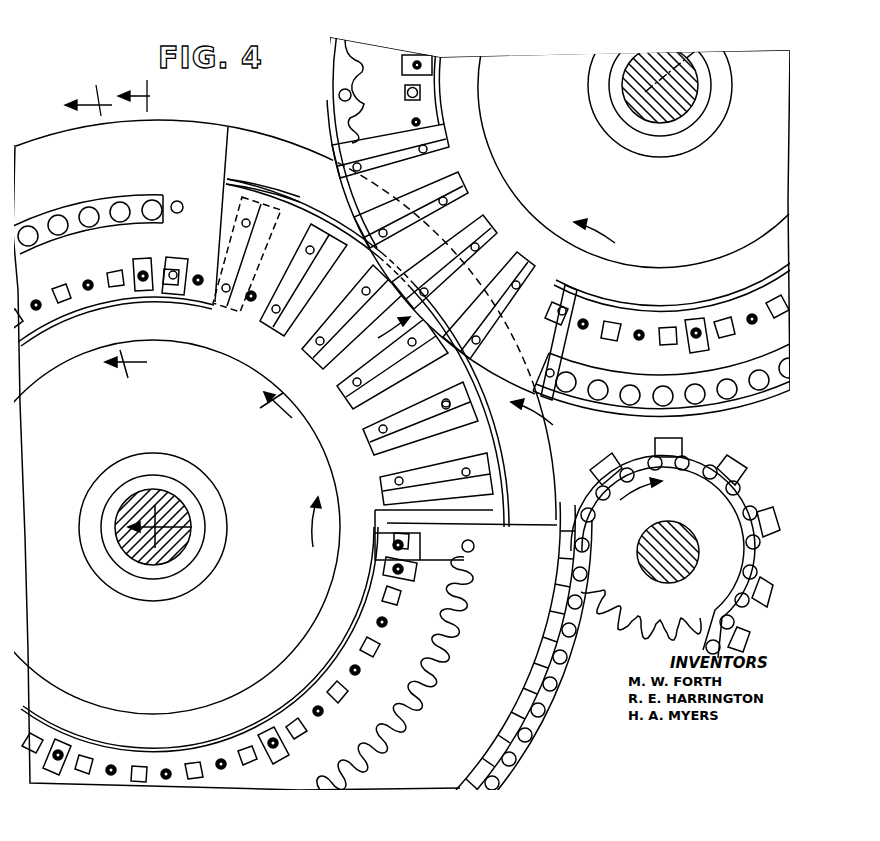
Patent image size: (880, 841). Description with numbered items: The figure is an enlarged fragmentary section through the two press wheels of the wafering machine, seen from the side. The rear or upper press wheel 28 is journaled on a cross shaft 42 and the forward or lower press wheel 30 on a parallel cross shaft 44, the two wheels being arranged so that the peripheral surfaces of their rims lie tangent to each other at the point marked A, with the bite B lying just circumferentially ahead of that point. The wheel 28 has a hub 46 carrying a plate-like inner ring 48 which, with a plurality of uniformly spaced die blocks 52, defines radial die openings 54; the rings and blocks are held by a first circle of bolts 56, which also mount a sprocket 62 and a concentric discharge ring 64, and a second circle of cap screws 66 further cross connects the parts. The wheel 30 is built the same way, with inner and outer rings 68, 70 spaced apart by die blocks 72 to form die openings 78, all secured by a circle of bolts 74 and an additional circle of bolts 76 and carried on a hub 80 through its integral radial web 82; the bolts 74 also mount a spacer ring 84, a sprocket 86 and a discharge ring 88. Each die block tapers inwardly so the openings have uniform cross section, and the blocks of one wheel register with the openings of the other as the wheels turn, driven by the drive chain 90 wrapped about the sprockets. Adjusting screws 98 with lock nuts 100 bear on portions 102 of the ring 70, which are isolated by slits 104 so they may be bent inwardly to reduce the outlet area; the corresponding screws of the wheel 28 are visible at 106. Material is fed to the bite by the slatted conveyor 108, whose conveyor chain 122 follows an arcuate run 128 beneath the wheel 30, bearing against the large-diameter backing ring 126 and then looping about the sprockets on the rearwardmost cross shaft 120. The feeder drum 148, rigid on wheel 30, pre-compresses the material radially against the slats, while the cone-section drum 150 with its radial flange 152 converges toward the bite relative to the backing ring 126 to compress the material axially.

The rear press wheel 28 is at (556, 45).
The forward press wheel 30 is at (42, 140).
The cross shaft 42 is at (662, 56).
The cross shaft 44 is at (128, 500).
The hub 46 is at (700, 112).
The inner ring 48 is at (676, 262).
The die block 52 is at (500, 255).
The die opening 54 is at (455, 205).
The bolt 56 is at (556, 312).
The sprocket 62 is at (385, 50).
The discharge ring 64 is at (645, 304).
The cap screw 66 is at (338, 94).
The inner ring 68 is at (300, 625).
The outer ring 70 is at (494, 510).
The die block 72 is at (357, 440).
The bolt 74 is at (396, 478).
The bolt 76 is at (177, 201).
The die opening 78 is at (305, 372).
The hub 80 is at (207, 560).
The radial web 82 is at (170, 527).
The spacer ring 84 is at (410, 546).
The sprocket 86 is at (405, 714).
The discharge ring 88 is at (300, 688).
The drive chain 90 is at (76, 205).
The adjusting screw 98 is at (89, 280).
The lock nut 100 is at (86, 281).
The bendable ring portion 102 is at (205, 300).
The slit 104 is at (230, 300).
The adjusting screw 106 is at (751, 314).
The conveyor 108 is at (548, 700).
The cross shaft 120 is at (678, 575).
The conveyor chain 122 is at (514, 752).
The backing ring 126 is at (203, 134).
The arcuate run 128 is at (556, 655).
The feeder drum 148 is at (496, 462).
The drum 150 is at (244, 132).
The radial flange 152 is at (274, 150).